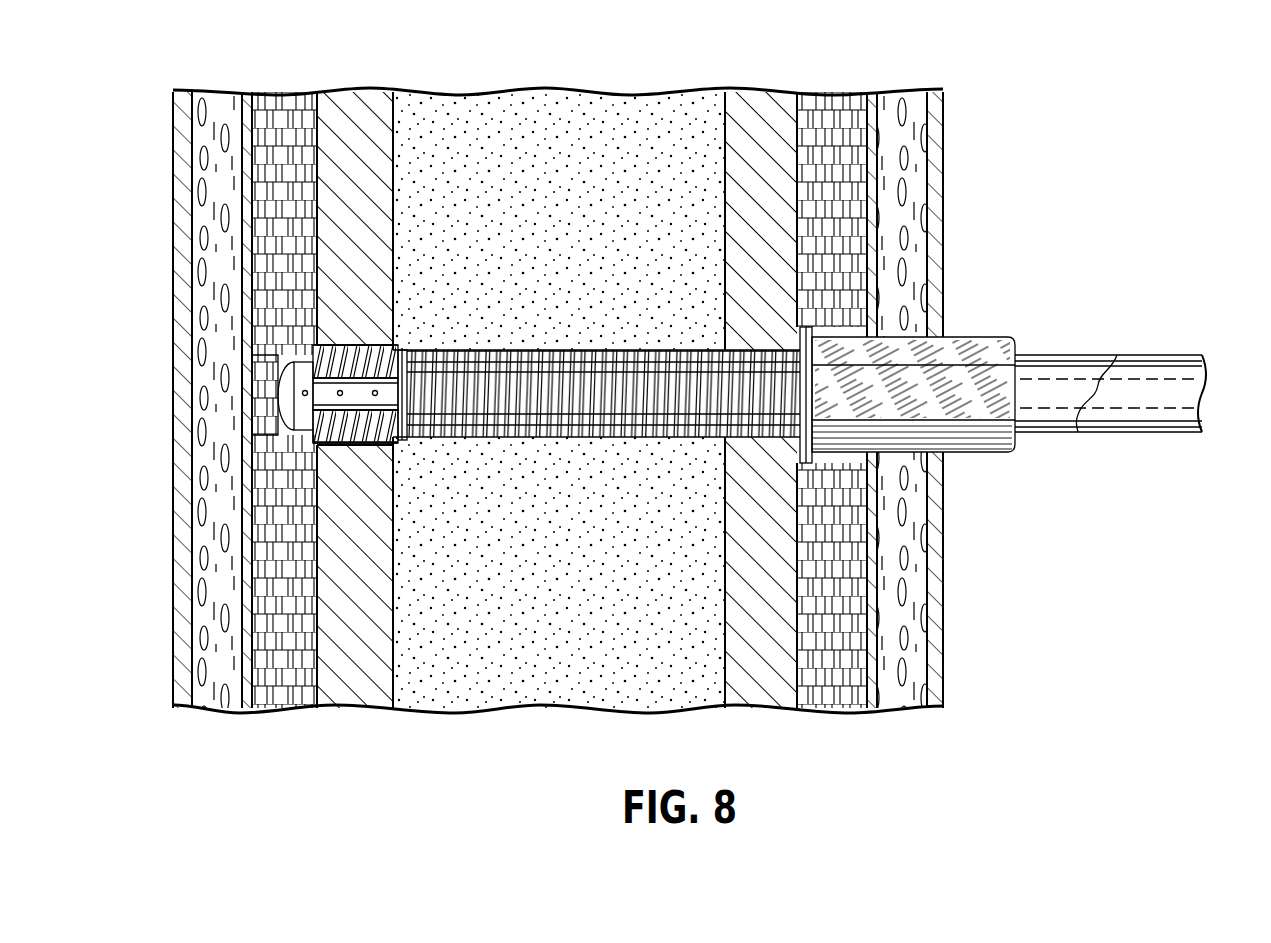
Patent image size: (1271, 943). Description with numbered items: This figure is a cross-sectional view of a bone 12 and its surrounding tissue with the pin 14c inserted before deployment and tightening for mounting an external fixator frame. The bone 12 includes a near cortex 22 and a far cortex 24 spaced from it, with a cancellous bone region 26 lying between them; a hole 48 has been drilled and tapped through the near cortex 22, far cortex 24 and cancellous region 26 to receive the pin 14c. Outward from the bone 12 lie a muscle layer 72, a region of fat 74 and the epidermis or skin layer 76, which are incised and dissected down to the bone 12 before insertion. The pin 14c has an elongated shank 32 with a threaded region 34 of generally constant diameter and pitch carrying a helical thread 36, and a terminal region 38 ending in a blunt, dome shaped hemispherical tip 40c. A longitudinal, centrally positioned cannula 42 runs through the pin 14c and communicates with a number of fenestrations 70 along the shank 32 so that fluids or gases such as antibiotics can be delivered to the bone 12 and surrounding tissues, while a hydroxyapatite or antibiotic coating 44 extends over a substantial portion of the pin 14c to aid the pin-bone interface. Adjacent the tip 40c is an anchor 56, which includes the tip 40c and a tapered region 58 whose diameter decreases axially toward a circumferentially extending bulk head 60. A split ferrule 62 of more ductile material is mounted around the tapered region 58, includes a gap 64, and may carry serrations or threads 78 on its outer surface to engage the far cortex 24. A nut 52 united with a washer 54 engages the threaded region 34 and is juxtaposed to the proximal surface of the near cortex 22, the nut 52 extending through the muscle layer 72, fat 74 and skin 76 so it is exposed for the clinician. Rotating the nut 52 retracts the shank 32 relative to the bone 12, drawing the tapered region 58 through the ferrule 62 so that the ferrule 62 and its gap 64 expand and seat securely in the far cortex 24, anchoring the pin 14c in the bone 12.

The bone 12 is at (562, 378).
The pin 14c is at (1129, 395).
The near cortex 22 is at (797, 160).
The far cortex 24 is at (359, 94).
The cancellous bone region 26 is at (579, 235).
The shank 32 is at (1167, 434).
The threaded region 34 is at (564, 455).
The helical thread 36 is at (585, 350).
The terminal region 38 is at (300, 330).
The tip 40c is at (283, 390).
The cannula 42 is at (1182, 388).
The hydroxyapatite or antibiotic coating 44 is at (1118, 408).
The hole 48 is at (345, 460).
The nut 52 is at (975, 337).
The washer 54 is at (808, 470).
The anchor 56 is at (305, 452).
The tapered region 58 is at (310, 450).
The bulk head 60 is at (405, 442).
The ferrule 62 is at (375, 447).
The gap 64 is at (330, 390).
The fenestrations 70 is at (395, 345).
The muscle layer 72 is at (284, 95).
The region of fat 74 is at (216, 94).
The skin layer 76 is at (186, 172).
The serrations or threads 78 is at (375, 393).